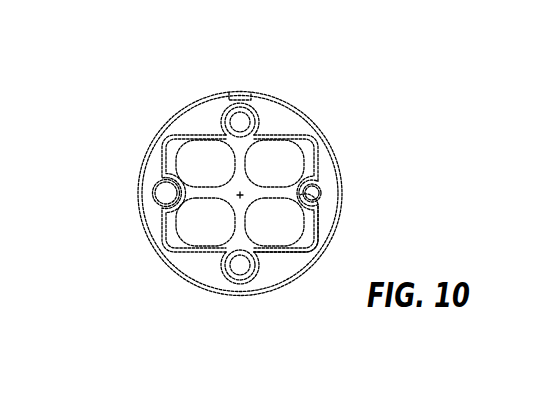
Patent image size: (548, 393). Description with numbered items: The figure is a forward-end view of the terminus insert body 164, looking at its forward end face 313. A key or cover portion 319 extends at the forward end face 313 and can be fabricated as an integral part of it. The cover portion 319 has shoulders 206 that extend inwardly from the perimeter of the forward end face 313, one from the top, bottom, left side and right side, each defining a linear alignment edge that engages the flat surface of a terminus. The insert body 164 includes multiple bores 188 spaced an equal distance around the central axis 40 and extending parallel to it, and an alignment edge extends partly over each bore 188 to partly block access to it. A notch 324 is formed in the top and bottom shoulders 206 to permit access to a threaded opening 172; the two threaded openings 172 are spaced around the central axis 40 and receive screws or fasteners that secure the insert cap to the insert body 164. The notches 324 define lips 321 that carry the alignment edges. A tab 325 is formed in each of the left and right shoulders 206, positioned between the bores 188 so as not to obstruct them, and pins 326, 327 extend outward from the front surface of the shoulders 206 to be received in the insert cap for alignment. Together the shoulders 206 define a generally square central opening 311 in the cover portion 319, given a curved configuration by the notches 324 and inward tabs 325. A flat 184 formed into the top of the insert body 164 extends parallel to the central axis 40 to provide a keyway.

The insert body 164 is at (148, 73).
The threaded opening 172 is at (238, 97).
The flat 184 is at (250, 92).
The cover portion 319 is at (282, 115).
The bore 188 is at (273, 160).
The central opening 311 is at (222, 134).
The tab 325 is at (290, 185).
The pin 326 is at (315, 187).
The pin 327 is at (158, 206).
The central axis 40 is at (248, 213).
The shoulder 206 is at (284, 243).
The forward end face 313 is at (230, 204).
The lip 321 is at (267, 255).
The notch 324 is at (250, 287).